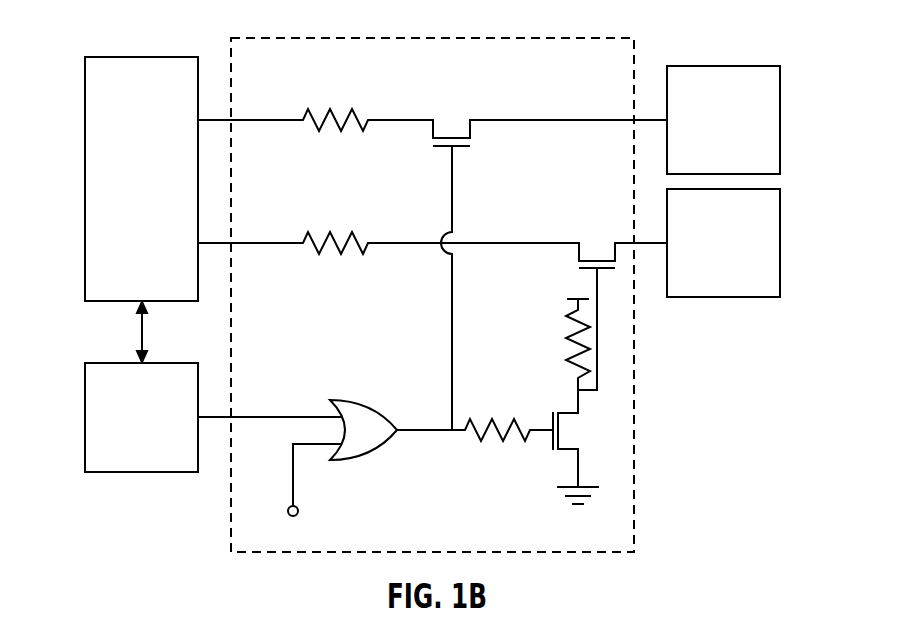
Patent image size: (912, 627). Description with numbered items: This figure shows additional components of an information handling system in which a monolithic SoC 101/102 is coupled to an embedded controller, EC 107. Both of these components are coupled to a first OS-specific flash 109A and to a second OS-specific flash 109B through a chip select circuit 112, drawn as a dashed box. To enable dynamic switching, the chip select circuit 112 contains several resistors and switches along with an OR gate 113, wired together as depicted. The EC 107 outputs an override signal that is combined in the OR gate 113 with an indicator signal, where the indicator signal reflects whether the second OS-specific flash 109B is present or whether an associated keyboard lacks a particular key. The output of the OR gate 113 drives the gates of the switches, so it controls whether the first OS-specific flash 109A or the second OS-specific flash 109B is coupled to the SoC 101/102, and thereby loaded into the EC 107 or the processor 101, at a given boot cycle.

The processor 101 is at (113, 162).
The SoC 102 is at (142, 57).
The EC 107 is at (85, 417).
The first OS-specific flash 109A is at (780, 121).
The second OS-specific flash 109B is at (780, 243).
The chip select circuit 112 is at (297, 38).
The OR gate 113 is at (367, 407).